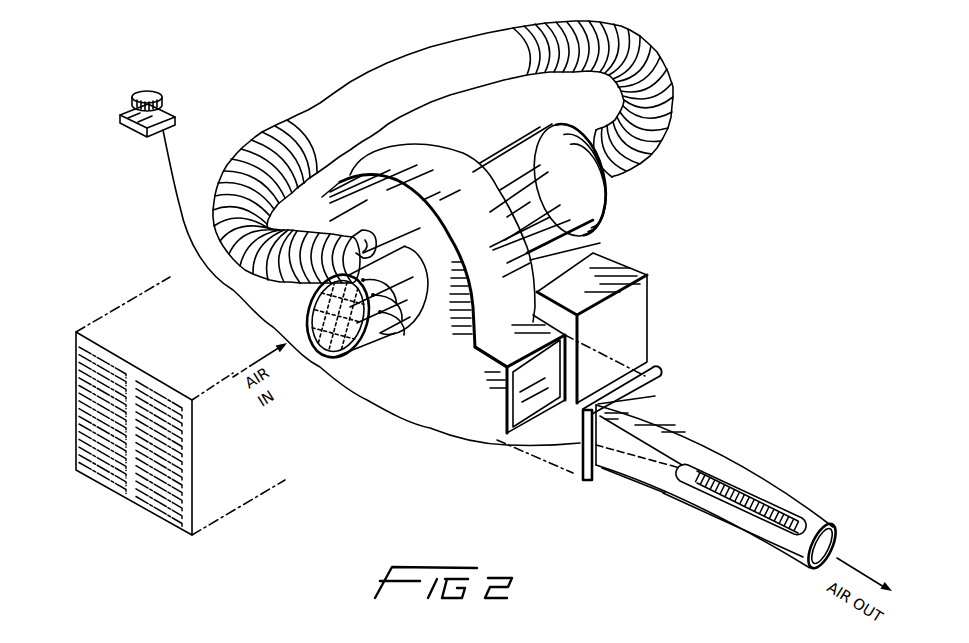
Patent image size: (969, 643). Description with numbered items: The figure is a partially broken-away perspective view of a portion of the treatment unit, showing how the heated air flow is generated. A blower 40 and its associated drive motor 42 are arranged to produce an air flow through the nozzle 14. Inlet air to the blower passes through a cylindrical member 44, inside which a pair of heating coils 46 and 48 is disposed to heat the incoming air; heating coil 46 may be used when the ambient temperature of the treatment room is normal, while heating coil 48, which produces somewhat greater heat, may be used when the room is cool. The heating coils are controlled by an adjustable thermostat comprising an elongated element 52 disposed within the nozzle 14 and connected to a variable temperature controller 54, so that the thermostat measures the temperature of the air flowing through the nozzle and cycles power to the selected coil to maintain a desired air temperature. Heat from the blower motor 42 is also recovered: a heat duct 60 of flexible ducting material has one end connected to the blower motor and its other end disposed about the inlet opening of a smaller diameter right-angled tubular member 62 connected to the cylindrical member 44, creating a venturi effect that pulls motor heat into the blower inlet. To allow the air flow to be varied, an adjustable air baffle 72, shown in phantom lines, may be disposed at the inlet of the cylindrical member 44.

The nozzle 14 is at (725, 462).
The blower 40 is at (580, 234).
The drive motor 42 is at (613, 189).
The cylindrical member 44 is at (407, 267).
The heating coil 46 is at (313, 304).
The heating coil 48 is at (350, 352).
The elongated element 52 is at (727, 507).
The variable temperature controller 54 is at (120, 114).
The heat duct 60 is at (653, 42).
The right-angled tubular member 62 is at (332, 218).
The adjustable air baffle 72 is at (97, 315).